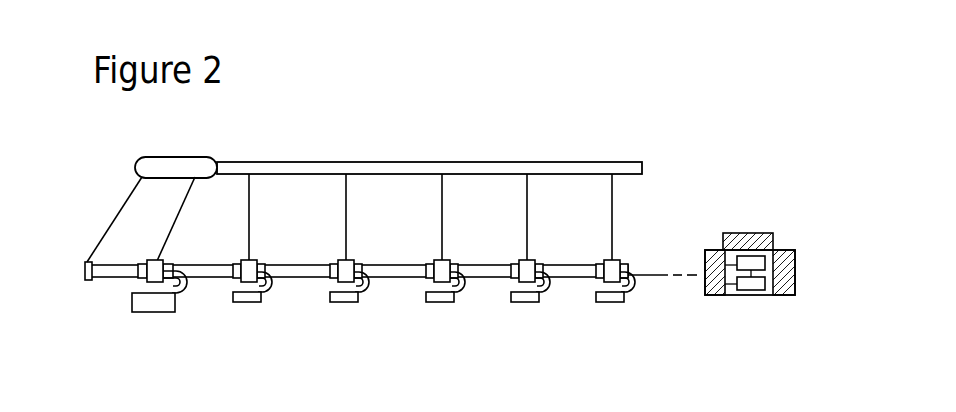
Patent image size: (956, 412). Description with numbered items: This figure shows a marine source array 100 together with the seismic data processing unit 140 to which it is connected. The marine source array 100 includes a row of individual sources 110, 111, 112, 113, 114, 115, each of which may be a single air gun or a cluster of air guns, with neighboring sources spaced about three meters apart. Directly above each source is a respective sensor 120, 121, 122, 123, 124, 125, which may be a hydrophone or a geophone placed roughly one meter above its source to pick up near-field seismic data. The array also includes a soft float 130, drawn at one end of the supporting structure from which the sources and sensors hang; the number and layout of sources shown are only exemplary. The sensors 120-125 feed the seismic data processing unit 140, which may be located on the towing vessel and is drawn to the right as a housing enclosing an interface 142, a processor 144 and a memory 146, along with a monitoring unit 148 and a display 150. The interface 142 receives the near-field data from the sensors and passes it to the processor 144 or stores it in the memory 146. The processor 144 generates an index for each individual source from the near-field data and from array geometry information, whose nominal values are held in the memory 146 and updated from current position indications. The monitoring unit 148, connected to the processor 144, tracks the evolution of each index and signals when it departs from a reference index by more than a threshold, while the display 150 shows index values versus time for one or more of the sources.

The marine source array 100 is at (371, 154).
The soft float 130 is at (167, 155).
The sensor 120 is at (160, 261).
The sensor 121 is at (254, 261).
The sensor 122 is at (350, 261).
The sensor 123 is at (445, 261).
The sensor 124 is at (531, 261).
The sensor 125 is at (615, 260).
The individual source 110 is at (163, 312).
The individual source 111 is at (244, 303).
The individual source 112 is at (338, 303).
The individual source 113 is at (437, 303).
The individual source 114 is at (525, 303).
The individual source 115 is at (610, 303).
The seismic data processing unit 140 is at (750, 270).
The interface 142 is at (712, 285).
The processor 144 is at (751, 291).
The memory 146 is at (755, 262).
The monitoring unit 148 is at (737, 243).
The display 150 is at (787, 288).